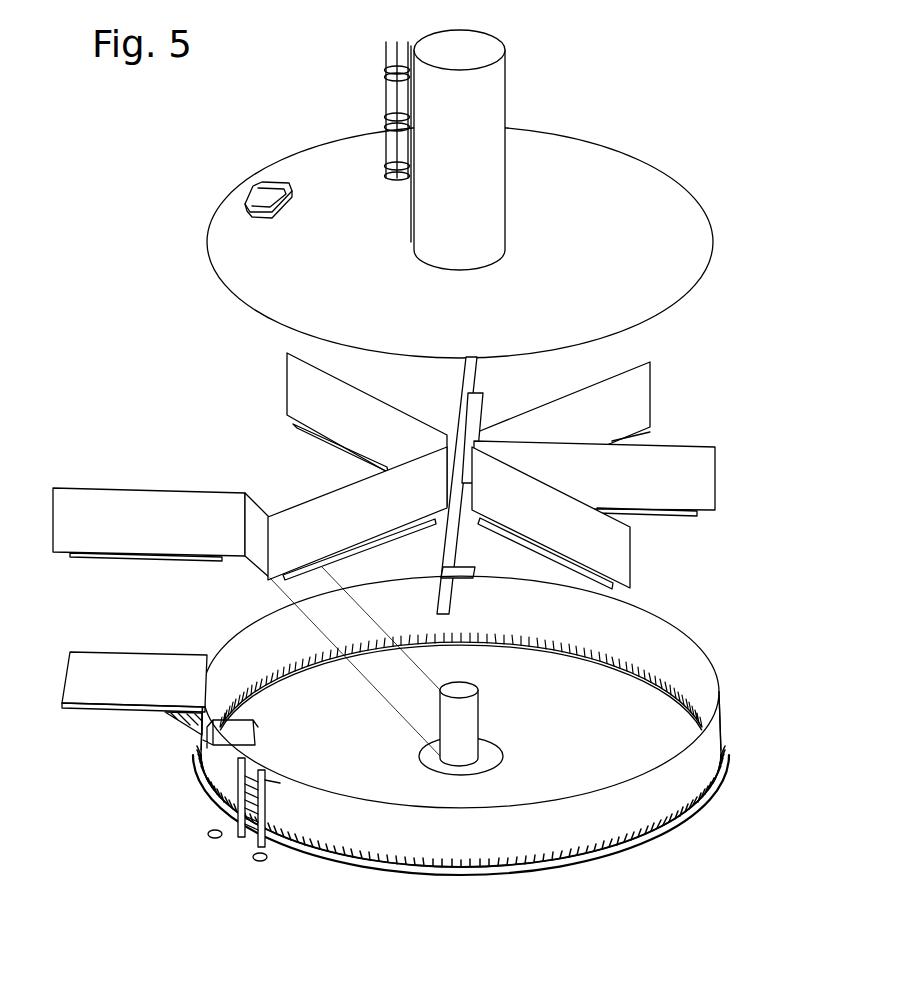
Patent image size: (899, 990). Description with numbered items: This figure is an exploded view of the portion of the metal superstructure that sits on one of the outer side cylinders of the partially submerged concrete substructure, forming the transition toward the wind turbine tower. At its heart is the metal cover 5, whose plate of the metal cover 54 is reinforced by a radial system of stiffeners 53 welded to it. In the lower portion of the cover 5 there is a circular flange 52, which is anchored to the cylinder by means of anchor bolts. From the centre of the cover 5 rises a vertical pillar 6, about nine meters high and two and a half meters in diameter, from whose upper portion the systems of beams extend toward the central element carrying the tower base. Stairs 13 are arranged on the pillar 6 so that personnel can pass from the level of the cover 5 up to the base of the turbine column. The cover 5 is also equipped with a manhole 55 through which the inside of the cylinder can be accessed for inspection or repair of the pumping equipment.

The metal cover 5 is at (262, 633).
The pillar 6 is at (500, 88).
The stairs 13 is at (390, 92).
The circular flange 52 is at (190, 773).
The stiffeners 53 is at (312, 395).
The plate of the metal cover 54 is at (635, 187).
The manhole 55 is at (267, 193).